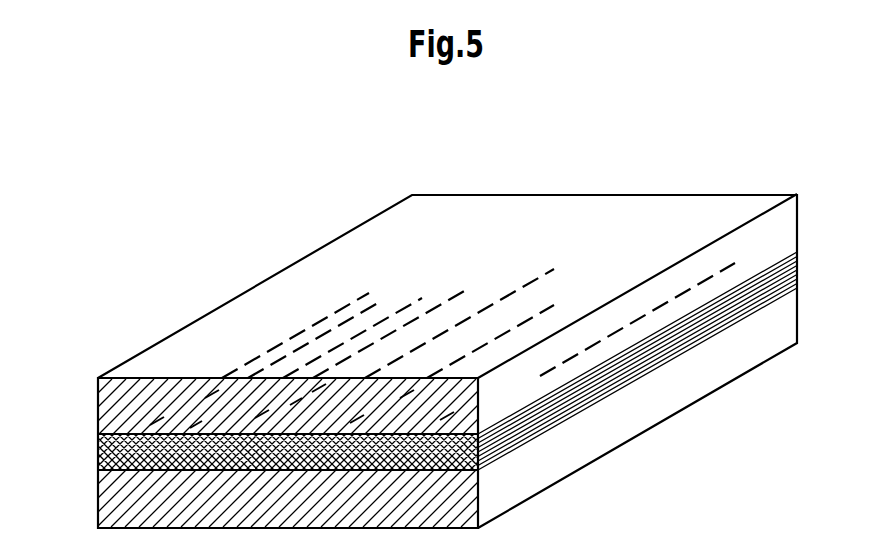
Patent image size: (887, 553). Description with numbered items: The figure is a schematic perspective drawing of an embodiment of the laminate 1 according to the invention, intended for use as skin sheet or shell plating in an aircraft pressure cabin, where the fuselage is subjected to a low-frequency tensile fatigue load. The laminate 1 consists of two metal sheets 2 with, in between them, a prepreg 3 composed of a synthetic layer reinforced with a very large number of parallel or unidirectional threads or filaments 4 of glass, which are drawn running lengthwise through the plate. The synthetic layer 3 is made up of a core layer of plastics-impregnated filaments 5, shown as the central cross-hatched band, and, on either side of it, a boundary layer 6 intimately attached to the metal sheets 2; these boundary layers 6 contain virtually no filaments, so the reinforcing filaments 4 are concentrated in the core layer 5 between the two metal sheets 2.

The laminate 1 is at (128, 360).
The metal sheets 2 is at (108, 405).
The prepreg 3 is at (261, 453).
The threads or filaments 4 is at (366, 330).
The core layer of plastics-impregnated filaments 5 is at (48, 435).
The boundary layer 6 is at (797, 252).